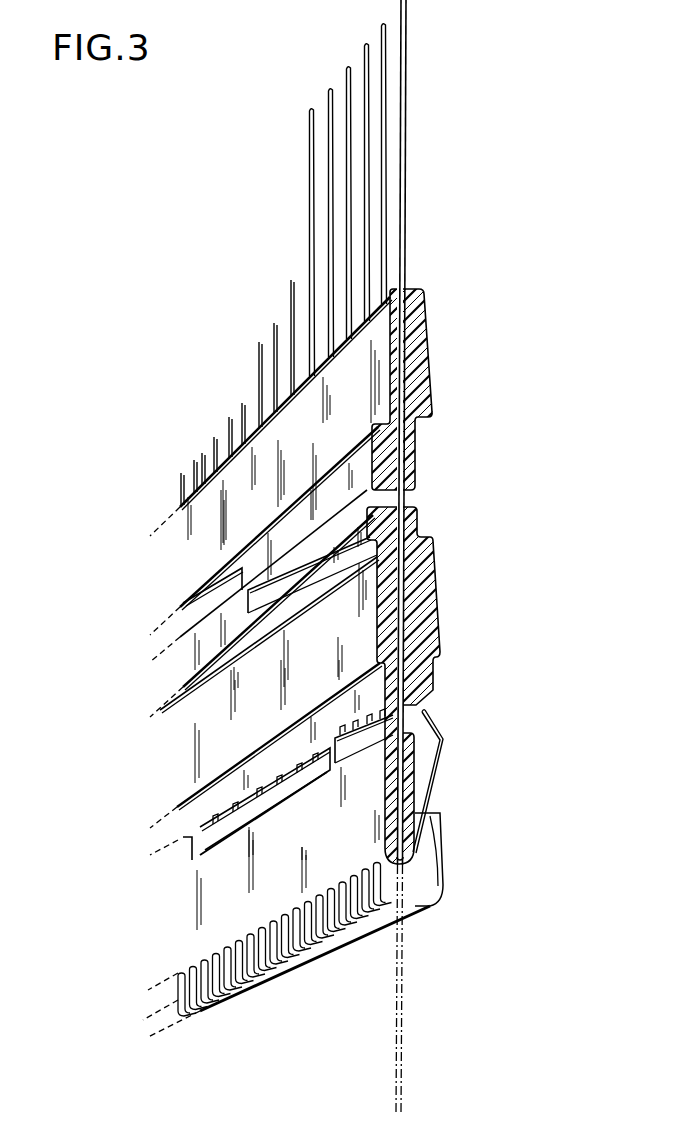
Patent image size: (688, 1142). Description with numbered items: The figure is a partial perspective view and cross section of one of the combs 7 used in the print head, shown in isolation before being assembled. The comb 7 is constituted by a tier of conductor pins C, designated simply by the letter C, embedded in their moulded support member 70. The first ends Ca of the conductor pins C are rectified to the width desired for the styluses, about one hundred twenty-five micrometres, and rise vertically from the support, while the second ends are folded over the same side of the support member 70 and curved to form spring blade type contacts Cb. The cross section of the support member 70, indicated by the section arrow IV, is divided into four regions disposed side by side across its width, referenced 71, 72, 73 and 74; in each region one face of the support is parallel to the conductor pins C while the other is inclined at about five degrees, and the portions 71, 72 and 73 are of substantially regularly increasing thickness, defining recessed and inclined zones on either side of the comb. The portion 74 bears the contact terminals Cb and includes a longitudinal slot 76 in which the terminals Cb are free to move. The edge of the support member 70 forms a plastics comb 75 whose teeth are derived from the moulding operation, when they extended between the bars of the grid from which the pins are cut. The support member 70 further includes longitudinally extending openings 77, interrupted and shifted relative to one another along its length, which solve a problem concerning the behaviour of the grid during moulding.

The first ends of the conductor pins Ca is at (407, 2).
The conductor pins C is at (403, 190).
The spring blade type contacts Cb is at (445, 752).
The comb 7 is at (422, 540).
The support member 70 is at (417, 358).
The first region of the support 71 is at (410, 289).
The second region of the support 72 is at (417, 425).
The third region of the support 73 is at (442, 540).
The fourth region of the support 74 is at (442, 666).
The plastics comb 75 is at (422, 866).
The longitudinal slot 76 is at (418, 782).
The longitudinally extending openings 77 is at (290, 573).
The section line IV is at (558, 555).